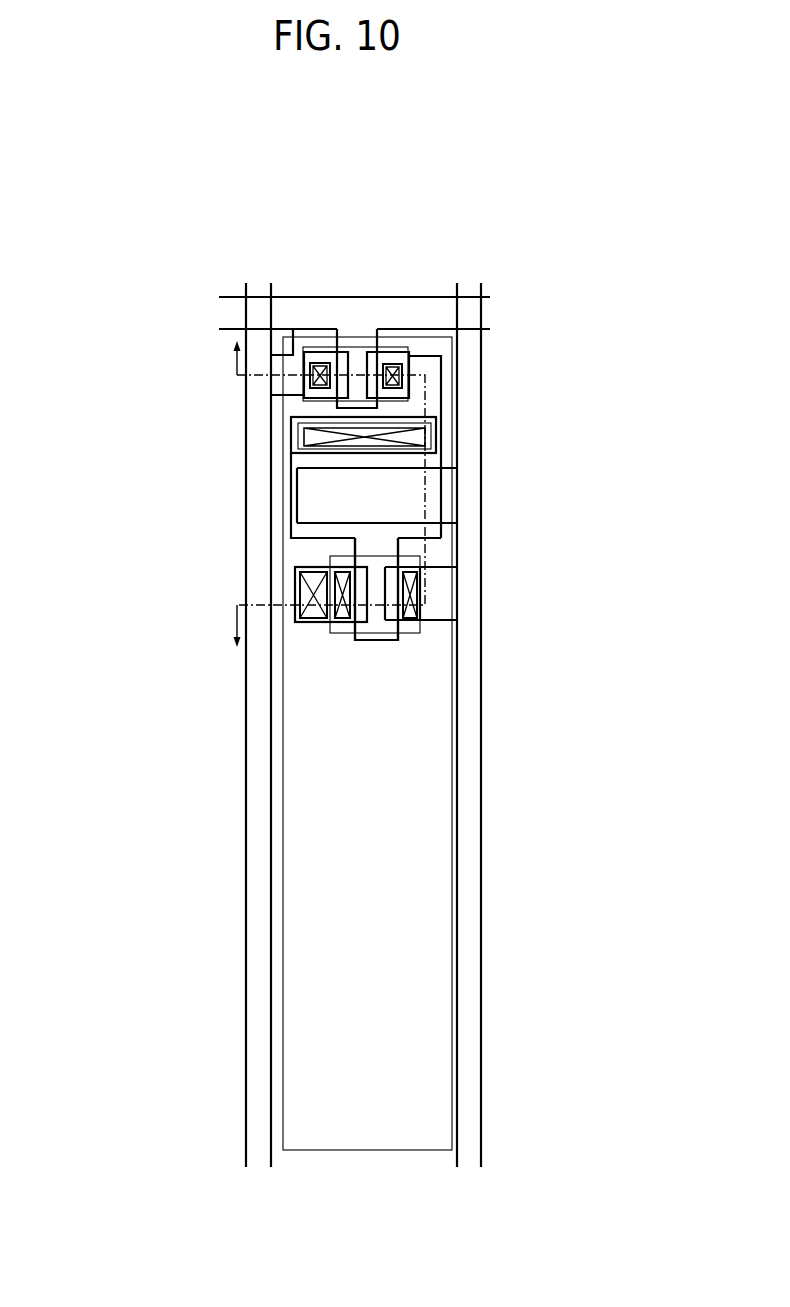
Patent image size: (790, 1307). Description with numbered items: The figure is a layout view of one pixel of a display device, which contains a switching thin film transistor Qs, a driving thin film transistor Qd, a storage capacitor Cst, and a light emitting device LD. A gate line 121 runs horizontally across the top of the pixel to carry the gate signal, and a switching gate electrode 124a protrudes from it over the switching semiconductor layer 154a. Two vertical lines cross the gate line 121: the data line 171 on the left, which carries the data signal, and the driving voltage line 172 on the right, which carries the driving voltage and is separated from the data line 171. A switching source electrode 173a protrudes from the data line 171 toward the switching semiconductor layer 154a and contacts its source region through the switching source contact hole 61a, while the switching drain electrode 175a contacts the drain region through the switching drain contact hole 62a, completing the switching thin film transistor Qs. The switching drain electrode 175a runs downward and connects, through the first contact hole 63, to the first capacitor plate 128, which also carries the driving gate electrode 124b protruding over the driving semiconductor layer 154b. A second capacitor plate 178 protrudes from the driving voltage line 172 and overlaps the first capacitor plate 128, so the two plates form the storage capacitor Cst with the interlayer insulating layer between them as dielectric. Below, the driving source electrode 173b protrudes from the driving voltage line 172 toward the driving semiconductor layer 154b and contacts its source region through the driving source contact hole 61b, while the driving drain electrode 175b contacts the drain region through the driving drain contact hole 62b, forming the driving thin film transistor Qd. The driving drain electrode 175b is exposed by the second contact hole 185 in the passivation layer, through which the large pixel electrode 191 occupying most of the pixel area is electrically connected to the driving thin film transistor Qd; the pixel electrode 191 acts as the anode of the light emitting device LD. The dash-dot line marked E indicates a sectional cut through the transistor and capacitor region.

The gate line 121 is at (220, 329).
The data line 171 is at (246, 430).
The driving voltage line 172 is at (482, 463).
The switching source electrode 173a is at (294, 330).
The switching gate electrode 124a is at (355, 362).
The switching semiconductor layer 154a is at (371, 352).
The switching drain electrode 175a is at (423, 354).
The switching source contact hole 61a is at (306, 380).
The switching drain contact hole 62a is at (401, 378).
The first contact hole 63 is at (305, 437).
The second capacitor plate 178 is at (312, 522).
The first capacitor plate 128 is at (292, 528).
The second contact hole 185 is at (300, 584).
The driving drain contact hole 62b is at (351, 574).
The driving source contact hole 61b is at (418, 590).
The driving drain electrode 175b is at (317, 623).
The driving semiconductor layer 154b is at (345, 634).
The driving gate electrode 124b is at (382, 641).
The driving source electrode 173b is at (432, 621).
The pixel electrode 191 is at (283, 890).
The switching thin film transistor Qs is at (482, 192).
The driving thin film transistor Qd is at (123, 650).
The storage capacitor Cst is at (140, 495).
The section line E is at (234, 629).
The light emitting device LD is at (320, 965).